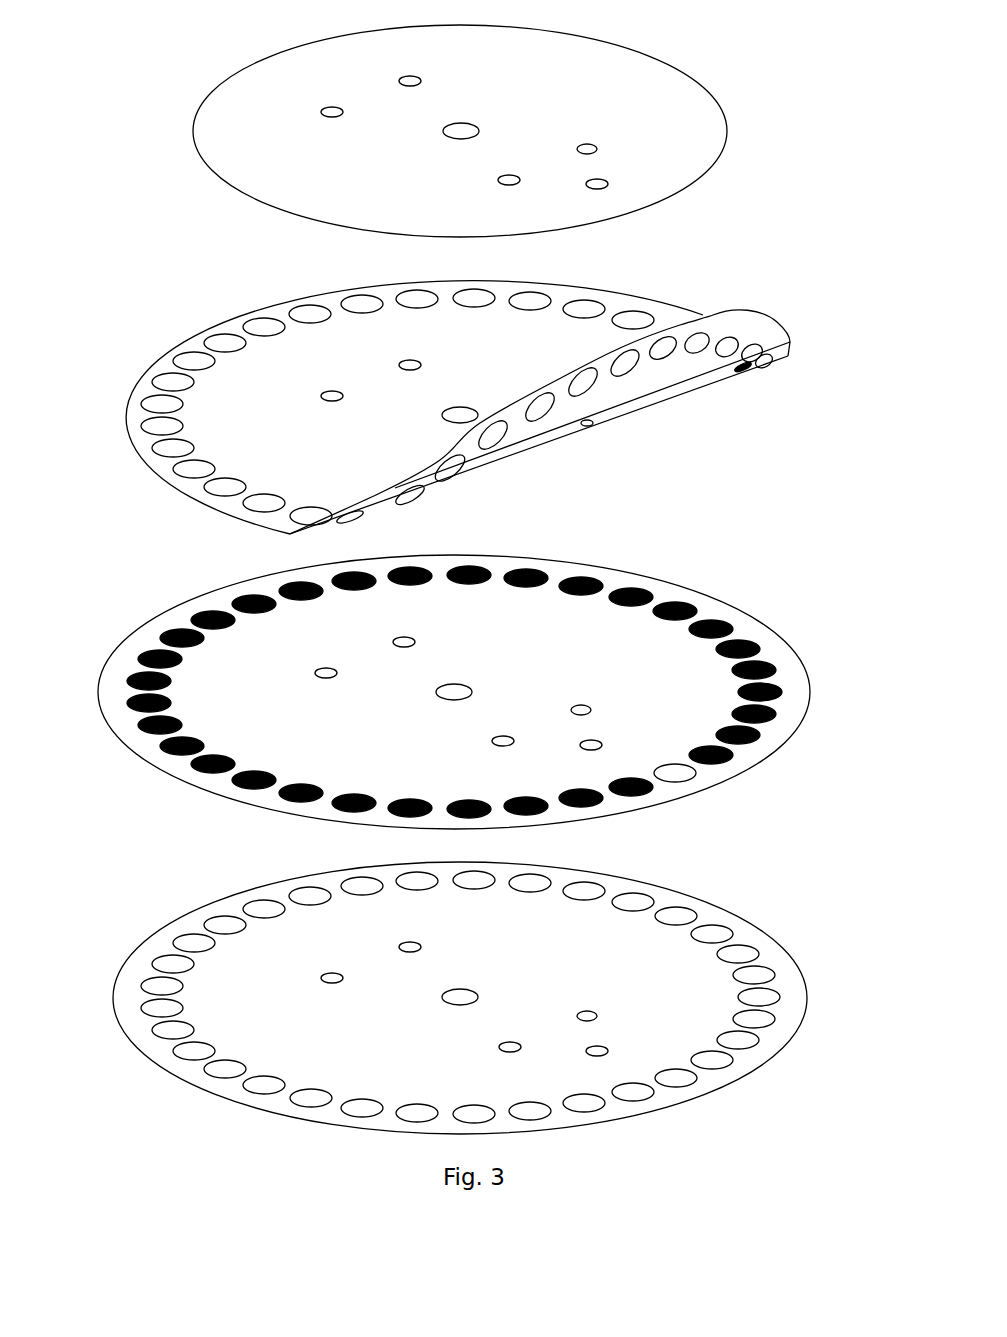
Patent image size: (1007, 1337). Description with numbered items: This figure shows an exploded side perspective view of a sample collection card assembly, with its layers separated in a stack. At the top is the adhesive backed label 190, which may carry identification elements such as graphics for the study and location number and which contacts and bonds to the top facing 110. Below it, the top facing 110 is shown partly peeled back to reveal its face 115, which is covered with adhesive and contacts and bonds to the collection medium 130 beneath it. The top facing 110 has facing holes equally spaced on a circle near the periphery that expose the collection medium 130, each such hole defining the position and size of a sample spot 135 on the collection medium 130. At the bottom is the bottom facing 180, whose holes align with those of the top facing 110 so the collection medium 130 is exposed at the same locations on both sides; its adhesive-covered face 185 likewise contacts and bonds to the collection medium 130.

The adhesive backed label 190 is at (193, 132).
The top facing 110 is at (407, 407).
The face of the facing 115 is at (642, 382).
The collection medium 130 is at (416, 686).
The sample spot 135 is at (647, 595).
The bottom facing 180 is at (454, 998).
The adhesive face of bottom facing 185 is at (795, 997).